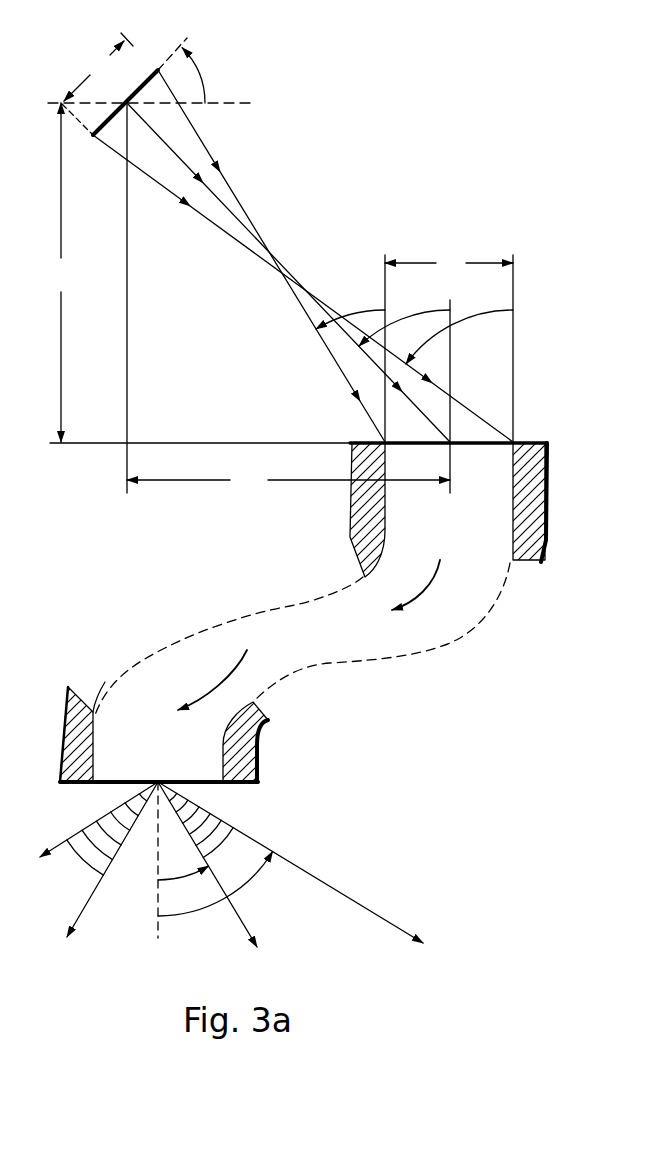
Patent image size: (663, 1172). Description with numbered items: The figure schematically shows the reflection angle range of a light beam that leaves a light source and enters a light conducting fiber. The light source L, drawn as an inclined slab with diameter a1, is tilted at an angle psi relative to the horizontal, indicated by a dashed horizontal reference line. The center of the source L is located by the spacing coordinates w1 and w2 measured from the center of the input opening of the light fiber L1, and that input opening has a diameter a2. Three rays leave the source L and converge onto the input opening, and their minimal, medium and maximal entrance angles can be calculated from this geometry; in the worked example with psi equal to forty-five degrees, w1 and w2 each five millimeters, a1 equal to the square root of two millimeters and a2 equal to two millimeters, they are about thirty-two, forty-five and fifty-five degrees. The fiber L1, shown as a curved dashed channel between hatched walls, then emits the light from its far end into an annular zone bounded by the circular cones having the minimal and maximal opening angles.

The light source L is at (133, 100).
The light fiber L1 is at (312, 628).
The diameter of the light source a1 is at (97, 84).
The diameter of the input opening a2 is at (449, 349).
The spacing coordinate w1 is at (199, 298).
The spacing coordinate w2 is at (288, 396).